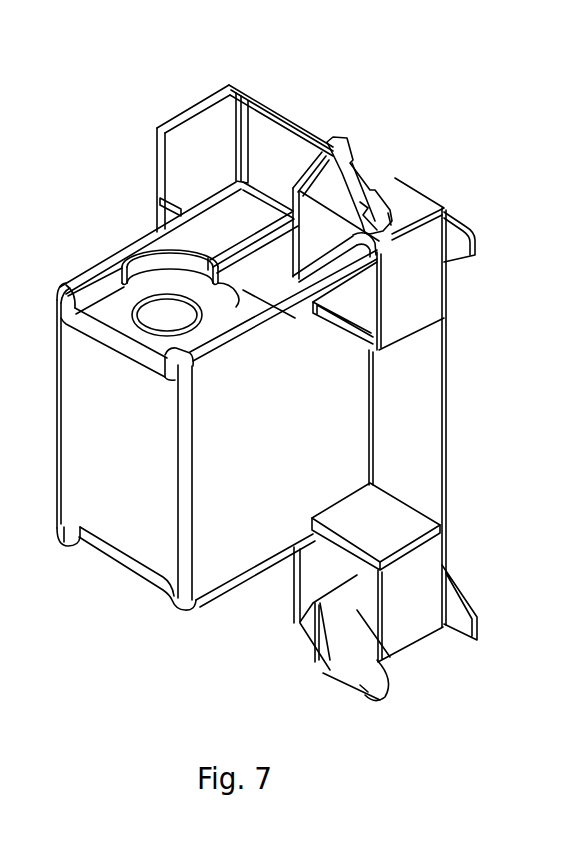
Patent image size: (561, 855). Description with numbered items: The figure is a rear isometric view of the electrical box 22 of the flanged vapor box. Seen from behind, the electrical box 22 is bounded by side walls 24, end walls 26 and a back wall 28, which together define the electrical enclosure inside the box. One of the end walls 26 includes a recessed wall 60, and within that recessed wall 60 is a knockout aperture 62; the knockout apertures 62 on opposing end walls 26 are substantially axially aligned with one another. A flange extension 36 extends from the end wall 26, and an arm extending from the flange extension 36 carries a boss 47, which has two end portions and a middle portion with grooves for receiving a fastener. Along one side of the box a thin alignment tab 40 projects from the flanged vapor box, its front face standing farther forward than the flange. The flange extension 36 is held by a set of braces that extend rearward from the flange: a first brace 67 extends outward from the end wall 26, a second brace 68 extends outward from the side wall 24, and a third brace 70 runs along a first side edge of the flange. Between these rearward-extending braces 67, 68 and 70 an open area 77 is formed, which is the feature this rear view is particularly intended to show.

The electrical box 22 is at (58, 136).
The side walls 24 is at (271, 447).
The end walls 26 is at (232, 227).
The back wall 28 is at (123, 447).
The flange extensions 36 is at (407, 197).
The alignment tabs 40 is at (478, 249).
The boss 47 is at (354, 183).
The recessed wall 60 is at (112, 313).
The knockout aperture 62 is at (180, 327).
The first brace 67 is at (334, 241).
The second brace 68 is at (340, 328).
The third brace 70 is at (424, 300).
The open area 77 is at (390, 657).